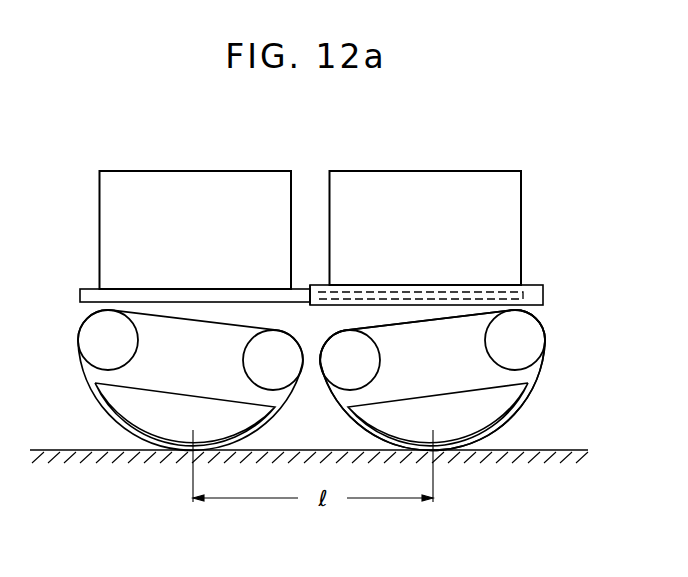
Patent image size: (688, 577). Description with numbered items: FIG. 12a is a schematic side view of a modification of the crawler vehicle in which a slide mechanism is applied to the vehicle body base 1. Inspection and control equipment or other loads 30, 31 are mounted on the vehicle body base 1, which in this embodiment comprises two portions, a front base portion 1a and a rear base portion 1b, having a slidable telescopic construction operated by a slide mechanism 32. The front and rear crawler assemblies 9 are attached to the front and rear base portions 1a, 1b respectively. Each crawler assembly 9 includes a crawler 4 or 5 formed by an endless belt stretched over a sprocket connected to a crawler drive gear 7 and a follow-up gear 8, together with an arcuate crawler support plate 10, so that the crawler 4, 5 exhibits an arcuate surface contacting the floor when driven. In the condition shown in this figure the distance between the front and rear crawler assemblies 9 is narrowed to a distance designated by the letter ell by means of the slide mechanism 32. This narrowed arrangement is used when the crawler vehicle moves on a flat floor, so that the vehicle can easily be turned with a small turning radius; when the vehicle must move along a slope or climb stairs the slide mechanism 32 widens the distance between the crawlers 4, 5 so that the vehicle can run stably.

The vehicle body base 1 is at (93, 283).
The front base portion 1a is at (300, 288).
The rear base portion 1b is at (542, 285).
The crawler 4 is at (308, 377).
The crawler 5 is at (353, 422).
The crawler drive gear 7 is at (255, 359).
The follow-up gear 8 is at (130, 347).
The crawler assembly 9 is at (83, 317).
The arcuate crawler support plate 10 is at (117, 405).
The load 30 is at (201, 180).
The load 31 is at (424, 181).
The slide mechanism 32 is at (424, 284).